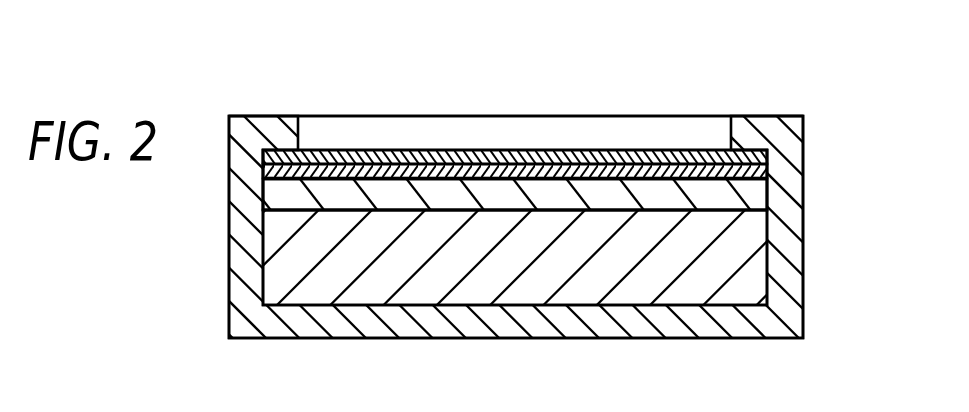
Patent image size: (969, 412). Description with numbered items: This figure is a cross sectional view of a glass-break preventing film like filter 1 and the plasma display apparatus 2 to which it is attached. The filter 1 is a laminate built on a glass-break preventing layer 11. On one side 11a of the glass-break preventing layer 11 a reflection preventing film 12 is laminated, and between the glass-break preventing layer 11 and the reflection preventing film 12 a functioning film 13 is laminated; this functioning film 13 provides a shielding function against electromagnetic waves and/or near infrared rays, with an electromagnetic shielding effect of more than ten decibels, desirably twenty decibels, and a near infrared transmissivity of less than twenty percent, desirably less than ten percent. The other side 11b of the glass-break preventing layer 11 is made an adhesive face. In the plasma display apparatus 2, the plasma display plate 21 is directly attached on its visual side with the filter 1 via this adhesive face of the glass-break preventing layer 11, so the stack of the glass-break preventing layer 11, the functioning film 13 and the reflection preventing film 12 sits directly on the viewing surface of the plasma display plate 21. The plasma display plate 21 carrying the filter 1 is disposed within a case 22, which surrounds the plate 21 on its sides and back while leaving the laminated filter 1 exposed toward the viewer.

The glass-break preventing film like filter 1 is at (884, 112).
The plasma display apparatus 2 is at (692, 96).
The glass-break preventing layer 11 is at (762, 195).
The one side of the glass-break preventing layer 11a is at (405, 180).
The other side of the glass-break preventing layer 11b is at (707, 211).
The reflection preventing film 12 is at (768, 149).
The functioning film 13 is at (765, 167).
The plasma display plate 21 is at (400, 282).
The case 22 is at (572, 326).